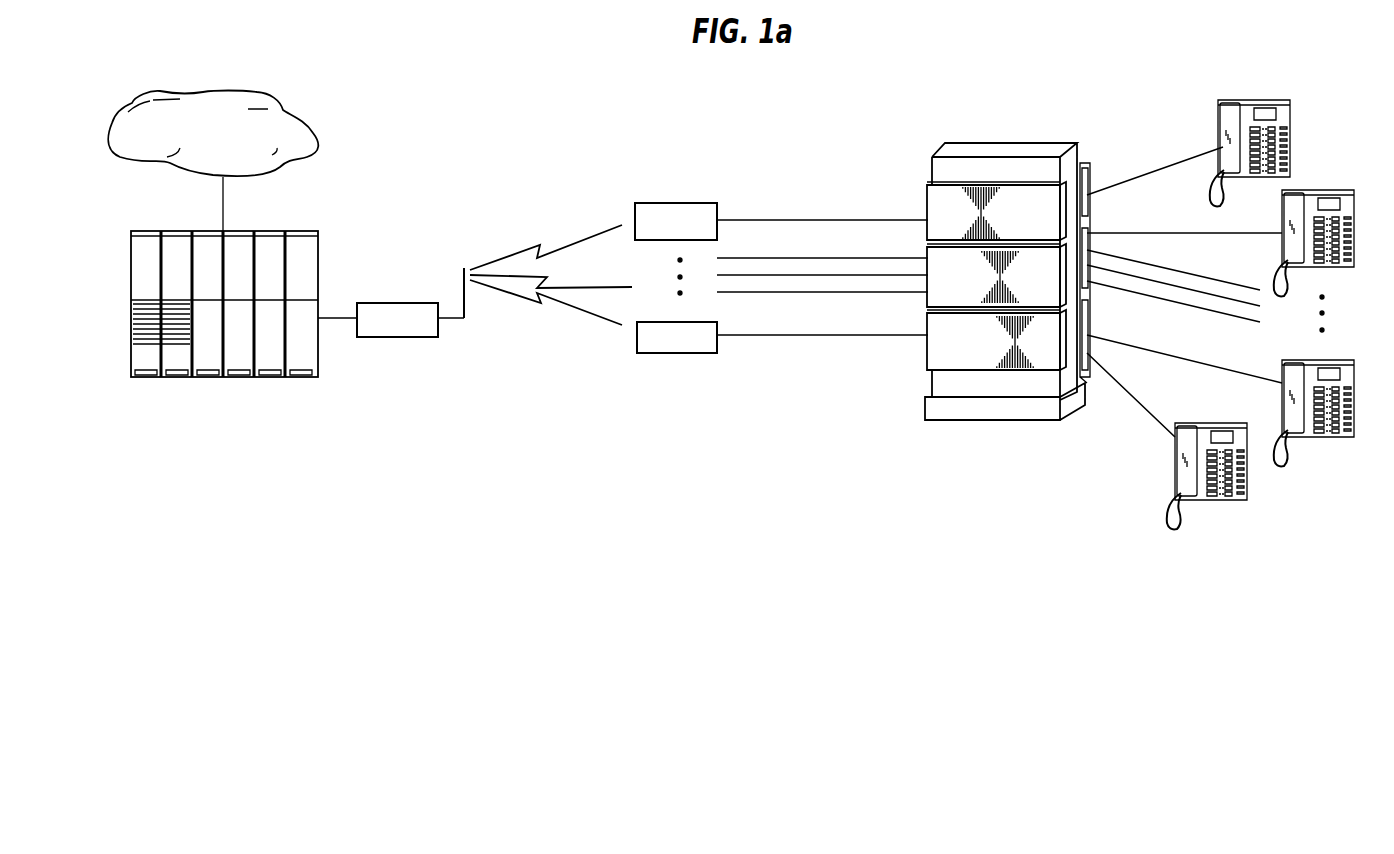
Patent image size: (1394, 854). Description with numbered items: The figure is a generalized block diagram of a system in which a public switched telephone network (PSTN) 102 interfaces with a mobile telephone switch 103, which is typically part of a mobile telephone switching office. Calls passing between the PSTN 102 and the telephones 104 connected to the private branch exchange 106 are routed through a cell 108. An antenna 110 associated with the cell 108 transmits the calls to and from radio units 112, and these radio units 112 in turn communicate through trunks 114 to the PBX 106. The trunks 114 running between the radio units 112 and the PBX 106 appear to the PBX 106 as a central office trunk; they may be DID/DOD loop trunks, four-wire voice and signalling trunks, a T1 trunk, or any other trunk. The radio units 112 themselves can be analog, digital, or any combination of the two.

The public switched telephone network 102 is at (238, 91).
The mobile telephone switch 103 is at (150, 378).
The telephones 104 is at (1262, 102).
The private branch exchange 106 is at (938, 422).
The cell 108 is at (378, 303).
The antenna 110 is at (472, 285).
The radio units 112 is at (655, 204).
The trunks 114 is at (793, 216).